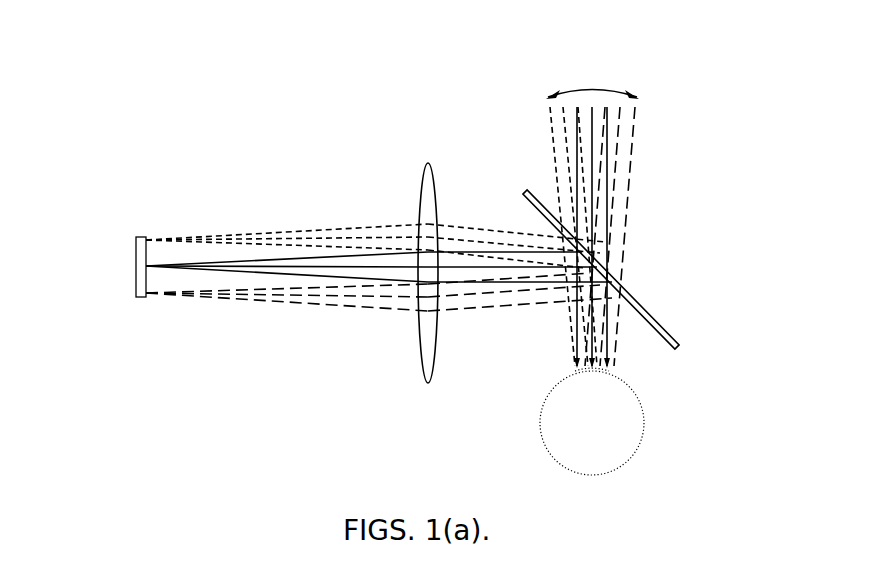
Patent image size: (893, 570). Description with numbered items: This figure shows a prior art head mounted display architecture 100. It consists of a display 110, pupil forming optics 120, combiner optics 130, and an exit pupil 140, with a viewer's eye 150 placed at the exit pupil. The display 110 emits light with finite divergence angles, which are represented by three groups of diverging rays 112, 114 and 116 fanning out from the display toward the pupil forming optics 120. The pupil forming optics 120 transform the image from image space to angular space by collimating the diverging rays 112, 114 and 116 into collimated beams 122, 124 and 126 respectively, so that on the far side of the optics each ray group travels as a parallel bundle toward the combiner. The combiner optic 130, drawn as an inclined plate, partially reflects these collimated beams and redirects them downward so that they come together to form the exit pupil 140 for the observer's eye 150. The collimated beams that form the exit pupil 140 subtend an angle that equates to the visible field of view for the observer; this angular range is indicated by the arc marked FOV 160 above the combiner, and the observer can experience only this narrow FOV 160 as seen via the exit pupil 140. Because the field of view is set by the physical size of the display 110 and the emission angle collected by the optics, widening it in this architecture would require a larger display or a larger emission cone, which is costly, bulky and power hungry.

The HMD architecture 100 is at (263, 82).
The display 110 is at (136, 253).
The ray 112 is at (303, 311).
The ray 114 is at (226, 272).
The ray 116 is at (257, 233).
The pupil forming optics 120 is at (425, 381).
The collimated beam 122 is at (527, 282).
The collimated beam 124 is at (545, 300).
The collimated beam 126 is at (510, 232).
The combiner optics 130 is at (678, 346).
The exit pupil 140 is at (575, 372).
The eye 150 is at (642, 430).
The FOV 160 is at (600, 90).